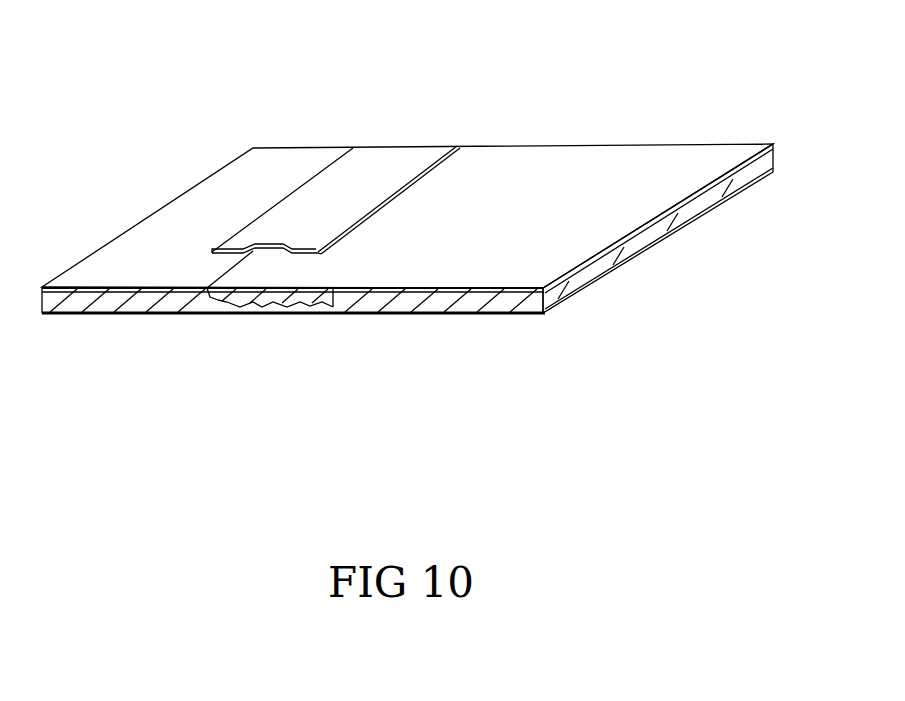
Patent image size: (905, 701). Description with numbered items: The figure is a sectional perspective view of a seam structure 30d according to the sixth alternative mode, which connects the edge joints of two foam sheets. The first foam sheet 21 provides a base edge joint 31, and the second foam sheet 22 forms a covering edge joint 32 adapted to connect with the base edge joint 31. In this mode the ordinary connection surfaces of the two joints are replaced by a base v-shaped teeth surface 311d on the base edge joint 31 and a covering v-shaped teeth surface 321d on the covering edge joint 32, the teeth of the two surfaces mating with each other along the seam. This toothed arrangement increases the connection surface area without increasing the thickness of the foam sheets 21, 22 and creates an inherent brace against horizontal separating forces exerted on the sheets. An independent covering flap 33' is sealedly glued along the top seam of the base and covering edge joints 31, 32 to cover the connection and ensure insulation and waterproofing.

The first foam sheet 21 is at (97, 318).
The second foam sheet 22 is at (622, 281).
The seam structure 30d is at (567, 68).
The base edge joint 31 is at (335, 320).
The base v-shaped teeth surface 311d is at (241, 306).
The covering edge joint 32 is at (355, 250).
The covering v-shaped teeth surface 321d is at (333, 287).
The covering flap 33' is at (366, 174).